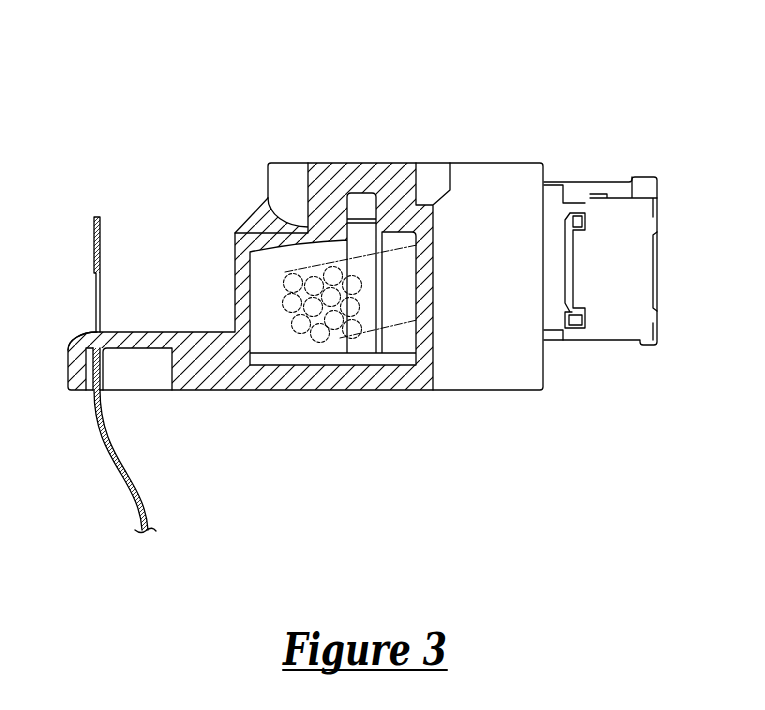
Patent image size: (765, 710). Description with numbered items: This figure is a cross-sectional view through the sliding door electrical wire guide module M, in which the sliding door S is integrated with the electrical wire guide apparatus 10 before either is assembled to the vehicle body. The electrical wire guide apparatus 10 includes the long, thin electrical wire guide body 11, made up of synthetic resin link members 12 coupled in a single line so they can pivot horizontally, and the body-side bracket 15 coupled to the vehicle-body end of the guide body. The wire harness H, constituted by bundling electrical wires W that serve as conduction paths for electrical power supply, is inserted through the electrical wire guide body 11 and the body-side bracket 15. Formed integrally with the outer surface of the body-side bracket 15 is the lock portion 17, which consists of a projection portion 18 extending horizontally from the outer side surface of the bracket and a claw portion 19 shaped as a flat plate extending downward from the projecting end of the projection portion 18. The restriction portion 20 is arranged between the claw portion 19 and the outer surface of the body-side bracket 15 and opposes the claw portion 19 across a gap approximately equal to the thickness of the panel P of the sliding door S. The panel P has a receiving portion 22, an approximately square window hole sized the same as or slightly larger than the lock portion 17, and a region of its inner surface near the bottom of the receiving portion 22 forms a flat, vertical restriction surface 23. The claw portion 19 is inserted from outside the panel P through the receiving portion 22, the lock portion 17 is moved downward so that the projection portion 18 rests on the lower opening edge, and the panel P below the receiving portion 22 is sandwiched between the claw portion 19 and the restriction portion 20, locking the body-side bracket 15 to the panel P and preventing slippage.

The electrical wire guide apparatus 10 is at (479, 89).
The electrical wire guide body 11 is at (663, 125).
The link member 12 is at (607, 322).
The body-side bracket 15 is at (327, 175).
The lock portion 17 is at (88, 278).
The projection portion 18 is at (90, 341).
The claw portion 19 is at (72, 372).
The restriction portion 20 is at (117, 380).
The receiving portion 22 is at (100, 288).
The restriction surface 23 is at (100, 358).
The sliding door S is at (136, 200).
The sliding door electrical wire guide module M is at (598, 74).
The panel P is at (147, 518).
The electrical wire W is at (293, 305).
The wire harness H is at (360, 457).